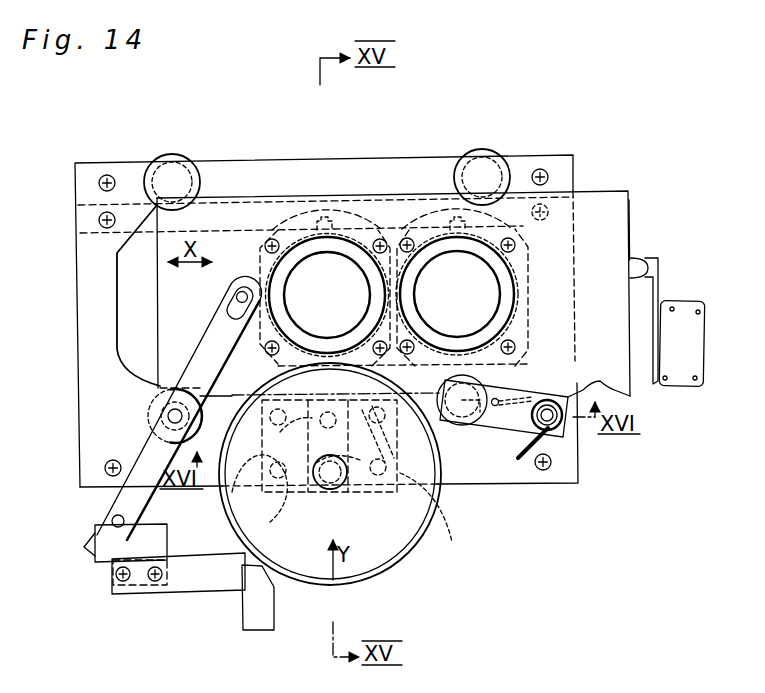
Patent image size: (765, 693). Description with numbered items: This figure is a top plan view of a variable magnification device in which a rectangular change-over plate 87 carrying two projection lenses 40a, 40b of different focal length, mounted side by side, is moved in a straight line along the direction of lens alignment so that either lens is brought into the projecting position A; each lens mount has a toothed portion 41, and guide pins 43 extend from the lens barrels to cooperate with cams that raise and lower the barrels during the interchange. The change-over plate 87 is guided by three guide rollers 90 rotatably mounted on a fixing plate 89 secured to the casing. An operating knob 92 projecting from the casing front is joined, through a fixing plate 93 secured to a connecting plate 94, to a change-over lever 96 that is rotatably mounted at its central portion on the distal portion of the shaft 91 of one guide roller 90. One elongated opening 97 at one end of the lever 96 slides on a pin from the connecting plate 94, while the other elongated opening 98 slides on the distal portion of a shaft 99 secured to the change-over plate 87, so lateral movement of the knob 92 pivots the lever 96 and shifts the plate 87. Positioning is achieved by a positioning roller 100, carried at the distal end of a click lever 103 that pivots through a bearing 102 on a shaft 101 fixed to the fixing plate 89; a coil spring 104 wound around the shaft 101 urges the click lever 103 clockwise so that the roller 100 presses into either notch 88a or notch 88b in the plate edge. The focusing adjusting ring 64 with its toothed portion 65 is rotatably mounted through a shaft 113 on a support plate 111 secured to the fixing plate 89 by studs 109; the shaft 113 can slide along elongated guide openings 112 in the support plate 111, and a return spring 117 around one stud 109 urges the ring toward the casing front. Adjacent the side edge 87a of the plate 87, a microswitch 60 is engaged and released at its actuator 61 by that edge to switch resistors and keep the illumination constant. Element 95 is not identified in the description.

The fixing plate 89 is at (100, 164).
The guide rollers 90 is at (173, 155).
The shaft 91 is at (168, 413).
The change-over plate 87 is at (607, 192).
The side edge 87a is at (629, 222).
The notch 88a is at (516, 365).
The notch 88b is at (620, 395).
The projection lens 40a is at (338, 262).
The projection lens 40b is at (442, 270).
The toothed portion 41 is at (306, 240).
The guide pins 43 is at (323, 216).
The projecting position A is at (290, 236).
The change-over lever 96 is at (195, 350).
The elongated opening 98 is at (226, 303).
The shaft 99 is at (240, 292).
The elongated opening 97 is at (112, 516).
The spring 95 is at (125, 546).
The connecting plate 94 is at (152, 540).
The fixing plate 93 is at (192, 586).
The operating knob 92 is at (247, 630).
The toothed portion 65 is at (413, 552).
The focusing adjusting ring 64 is at (371, 566).
The shaft 113 is at (336, 489).
The elongated guide openings 112 is at (318, 464).
The studs 109 is at (299, 365).
The support plate 111 is at (272, 505).
The return spring 117 is at (451, 516).
The positioning roller 100 is at (447, 420).
The shaft 101 is at (560, 420).
The bearing 102 is at (503, 418).
The click lever 103 is at (522, 458).
The coil spring 104 is at (563, 440).
The actuator 61 is at (657, 270).
The microswitch 60 is at (690, 383).